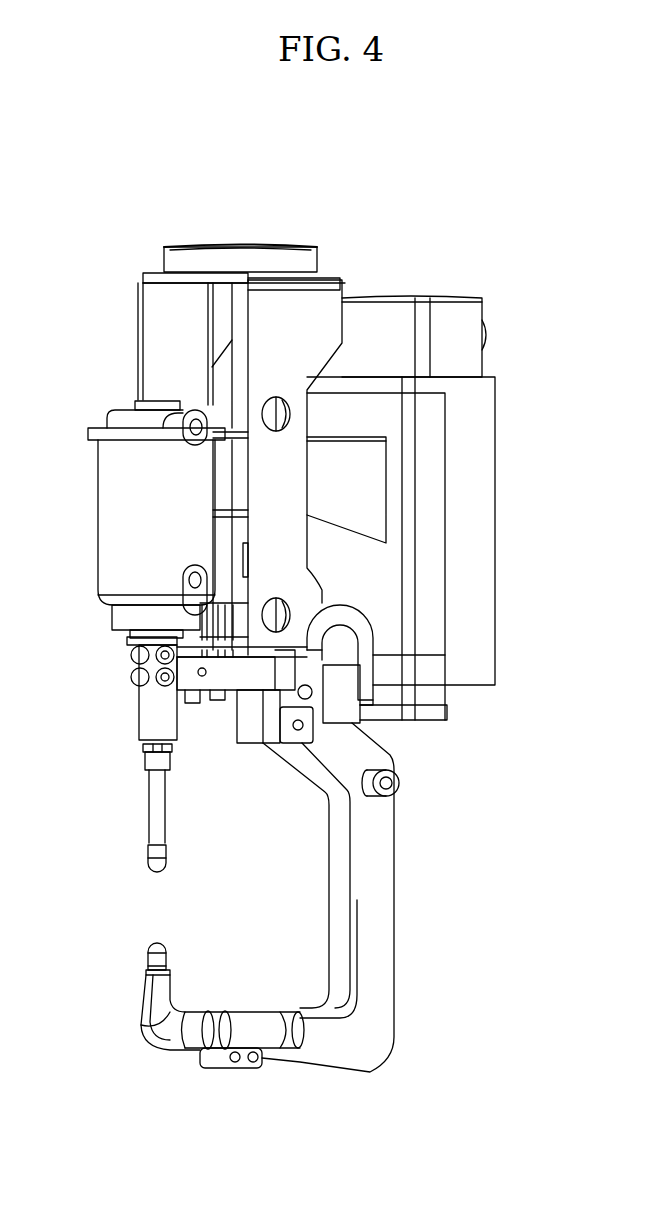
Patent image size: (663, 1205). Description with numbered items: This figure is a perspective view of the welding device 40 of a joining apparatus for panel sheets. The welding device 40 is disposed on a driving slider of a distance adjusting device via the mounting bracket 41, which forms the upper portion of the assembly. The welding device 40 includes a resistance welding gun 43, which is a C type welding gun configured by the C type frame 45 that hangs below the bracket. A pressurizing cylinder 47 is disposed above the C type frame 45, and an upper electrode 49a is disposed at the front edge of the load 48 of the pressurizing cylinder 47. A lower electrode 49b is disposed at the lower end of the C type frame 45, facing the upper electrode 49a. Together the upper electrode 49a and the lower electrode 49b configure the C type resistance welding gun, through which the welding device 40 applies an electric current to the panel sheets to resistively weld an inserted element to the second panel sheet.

The welding device 40 is at (347, 175).
The mounting bracket 41 is at (258, 319).
The resistance welding gun 43 is at (431, 808).
The C type frame 45 is at (400, 928).
The pressurizing cylinder 47 is at (116, 527).
The load 48 is at (147, 717).
The upper electrode 49a is at (151, 862).
The lower electrode 49b is at (152, 962).